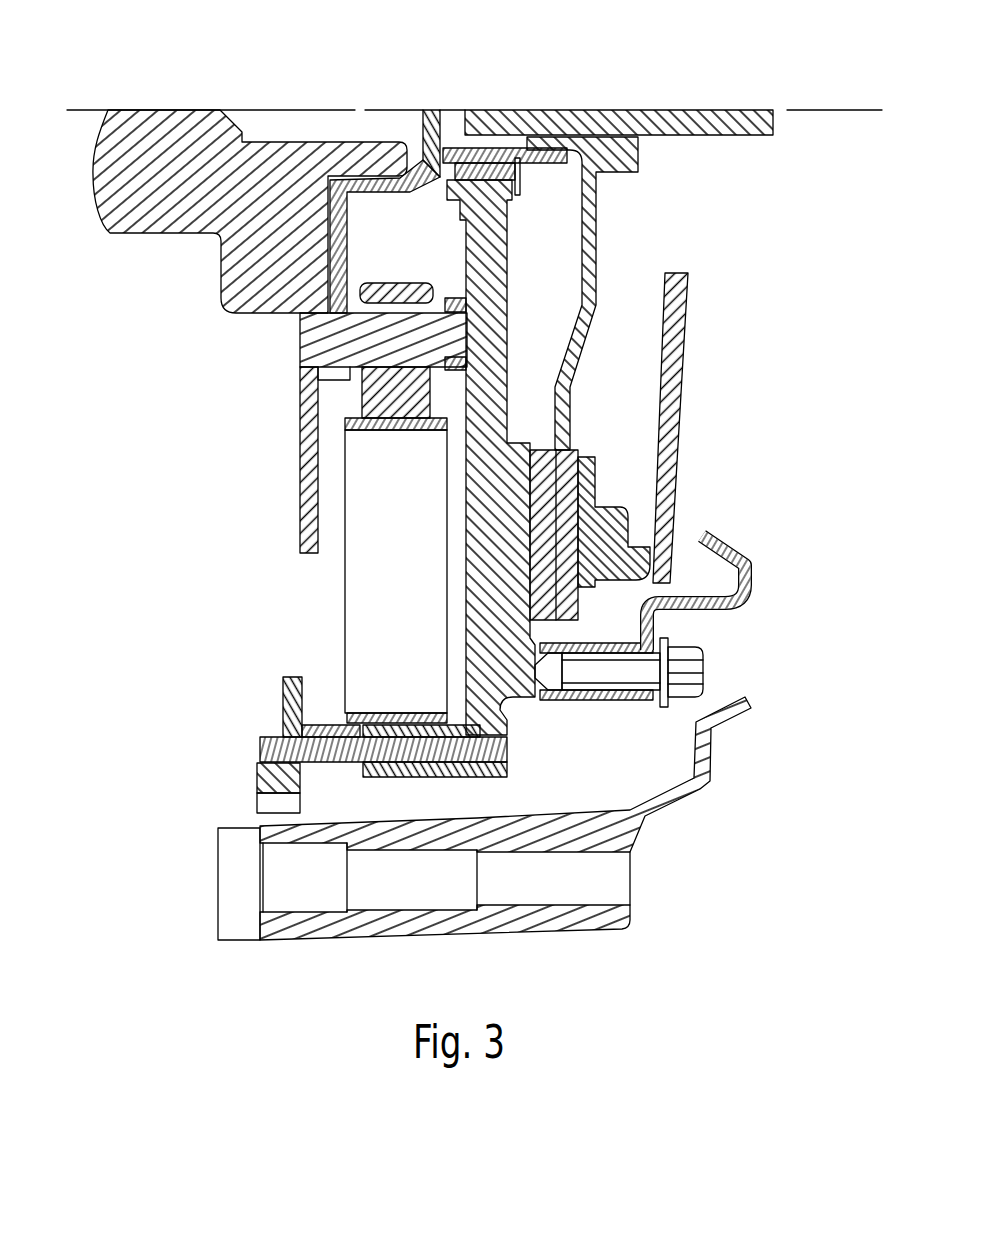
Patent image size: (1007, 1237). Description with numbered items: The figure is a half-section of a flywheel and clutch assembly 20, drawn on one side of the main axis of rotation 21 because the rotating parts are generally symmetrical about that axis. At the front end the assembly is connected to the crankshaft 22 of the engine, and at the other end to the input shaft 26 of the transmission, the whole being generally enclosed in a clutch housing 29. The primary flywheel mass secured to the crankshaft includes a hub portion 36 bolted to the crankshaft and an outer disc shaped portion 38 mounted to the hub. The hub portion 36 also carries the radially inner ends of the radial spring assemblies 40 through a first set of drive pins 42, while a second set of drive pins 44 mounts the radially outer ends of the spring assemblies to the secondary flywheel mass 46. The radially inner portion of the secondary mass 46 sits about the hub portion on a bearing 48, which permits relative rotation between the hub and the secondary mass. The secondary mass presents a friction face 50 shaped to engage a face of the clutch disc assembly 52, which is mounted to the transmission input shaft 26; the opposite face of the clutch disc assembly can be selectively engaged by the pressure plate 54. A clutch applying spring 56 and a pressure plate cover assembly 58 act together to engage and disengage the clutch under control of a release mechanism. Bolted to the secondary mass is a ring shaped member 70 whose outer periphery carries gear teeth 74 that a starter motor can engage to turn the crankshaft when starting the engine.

The flywheel and clutch assembly 20 is at (474, 485).
The main axis of rotation 21 is at (790, 110).
The crankshaft 22 is at (203, 107).
The input shaft 26 is at (733, 137).
The clutch housing 29 is at (727, 720).
The hub portion 36 is at (327, 268).
The outer disc shaped portion 38 is at (300, 512).
The radial spring assemblies 40 is at (345, 628).
The first set of drive pins 42 is at (298, 345).
The second set of drive pins 44 is at (262, 745).
The secondary flywheel mass 46 is at (513, 718).
The bearing 48 is at (493, 187).
The friction face 50 is at (530, 497).
The clutch disc assembly 52 is at (600, 267).
The pressure plate 54 is at (630, 520).
The clutch applying spring 56 is at (683, 317).
The pressure plate cover assembly 58 is at (727, 537).
The ring shaped member 70 is at (283, 690).
The gear teeth 74 is at (258, 803).